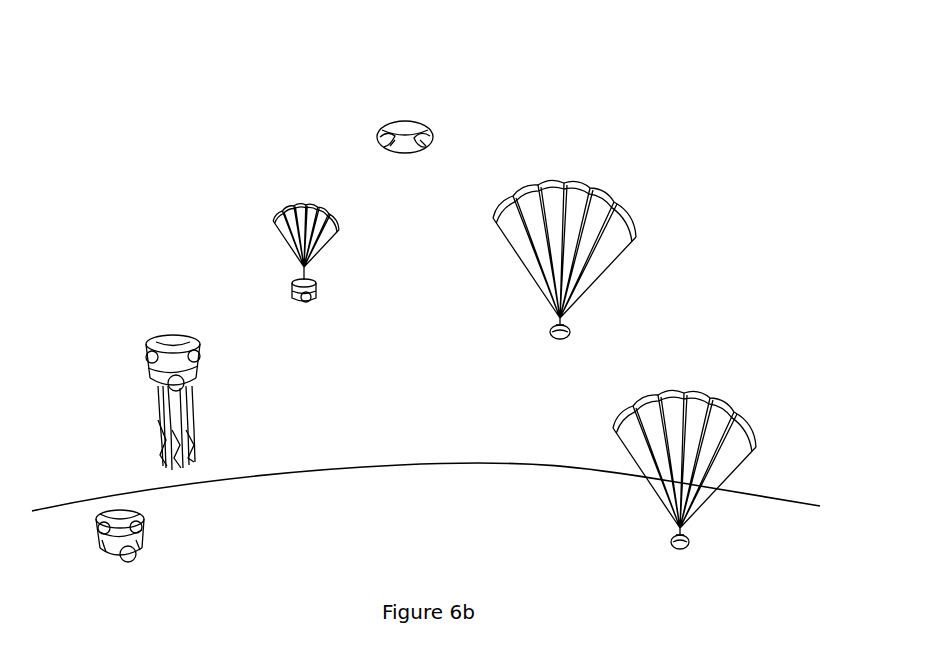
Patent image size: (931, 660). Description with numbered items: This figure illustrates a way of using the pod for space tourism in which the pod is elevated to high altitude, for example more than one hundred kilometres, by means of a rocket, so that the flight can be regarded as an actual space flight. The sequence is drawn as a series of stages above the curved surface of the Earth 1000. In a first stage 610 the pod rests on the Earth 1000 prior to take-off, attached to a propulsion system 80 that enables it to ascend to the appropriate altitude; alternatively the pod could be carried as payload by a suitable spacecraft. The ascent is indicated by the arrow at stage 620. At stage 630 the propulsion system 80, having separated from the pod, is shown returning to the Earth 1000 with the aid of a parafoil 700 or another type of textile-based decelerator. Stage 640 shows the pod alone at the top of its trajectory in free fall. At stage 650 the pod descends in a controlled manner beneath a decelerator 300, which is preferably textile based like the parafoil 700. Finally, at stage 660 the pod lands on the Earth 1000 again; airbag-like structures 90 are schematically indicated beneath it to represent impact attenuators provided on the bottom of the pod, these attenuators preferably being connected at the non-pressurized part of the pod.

The decelerator 300 is at (606, 197).
The parafoil 700 is at (291, 206).
The propulsion system 80 is at (155, 382).
The airbag-like structures 90 is at (676, 560).
The first stage 610 is at (176, 549).
The ascent step 620 is at (237, 391).
The stage 630 is at (347, 309).
The stage 640 is at (410, 181).
The stage 650 is at (511, 319).
The stage 660 is at (620, 510).
The Earth 1000 is at (382, 498).